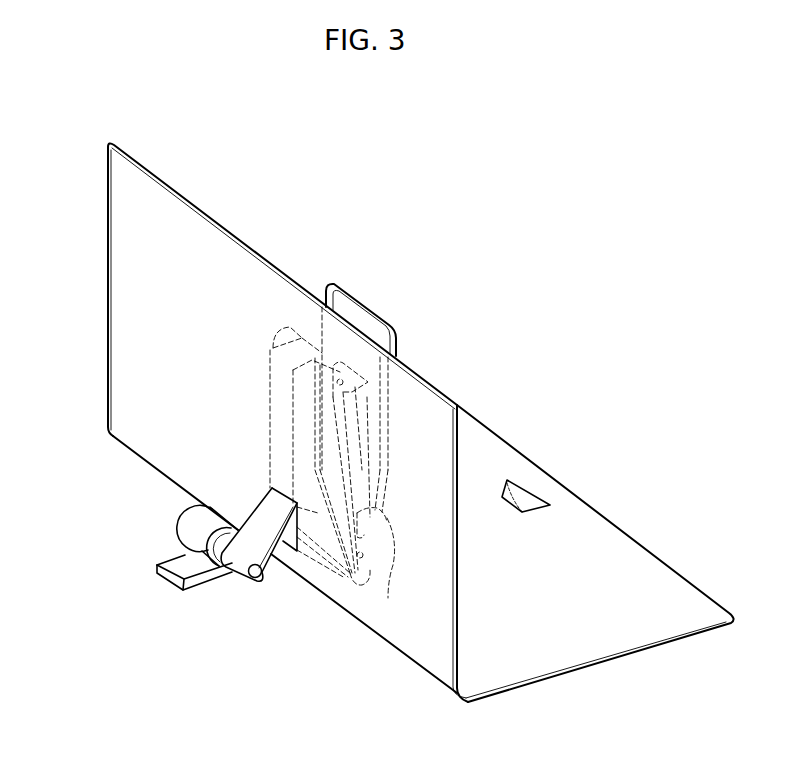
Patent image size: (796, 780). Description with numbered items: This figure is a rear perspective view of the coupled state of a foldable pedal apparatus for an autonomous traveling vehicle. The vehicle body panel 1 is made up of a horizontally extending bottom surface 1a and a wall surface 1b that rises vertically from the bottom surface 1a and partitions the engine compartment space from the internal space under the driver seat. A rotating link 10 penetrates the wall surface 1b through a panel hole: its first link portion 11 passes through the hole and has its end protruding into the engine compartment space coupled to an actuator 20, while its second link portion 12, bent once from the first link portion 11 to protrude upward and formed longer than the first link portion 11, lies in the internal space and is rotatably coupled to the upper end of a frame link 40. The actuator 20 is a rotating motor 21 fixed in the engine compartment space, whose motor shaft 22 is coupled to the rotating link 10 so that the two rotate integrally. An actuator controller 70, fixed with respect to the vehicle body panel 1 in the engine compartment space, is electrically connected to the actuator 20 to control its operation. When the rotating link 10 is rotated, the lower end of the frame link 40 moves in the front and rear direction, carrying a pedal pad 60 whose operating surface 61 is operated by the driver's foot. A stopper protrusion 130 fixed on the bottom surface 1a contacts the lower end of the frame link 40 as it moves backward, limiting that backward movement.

The vehicle body panel 1 is at (379, 402).
The bottom surface 1a is at (637, 560).
The wall surface 1b is at (128, 256).
The rotating link 10 is at (153, 552).
The first link portion 11 is at (240, 557).
The second link portion 12 is at (270, 385).
The actuator 20 is at (152, 536).
The rotating motor 21 is at (183, 533).
The motor shaft 22 is at (266, 613).
The frame link 40 is at (388, 598).
The pedal pad 60 is at (381, 339).
The operating surface 61 is at (340, 300).
The actuator controller 70 is at (160, 577).
The stopper protrusion 130 is at (530, 487).